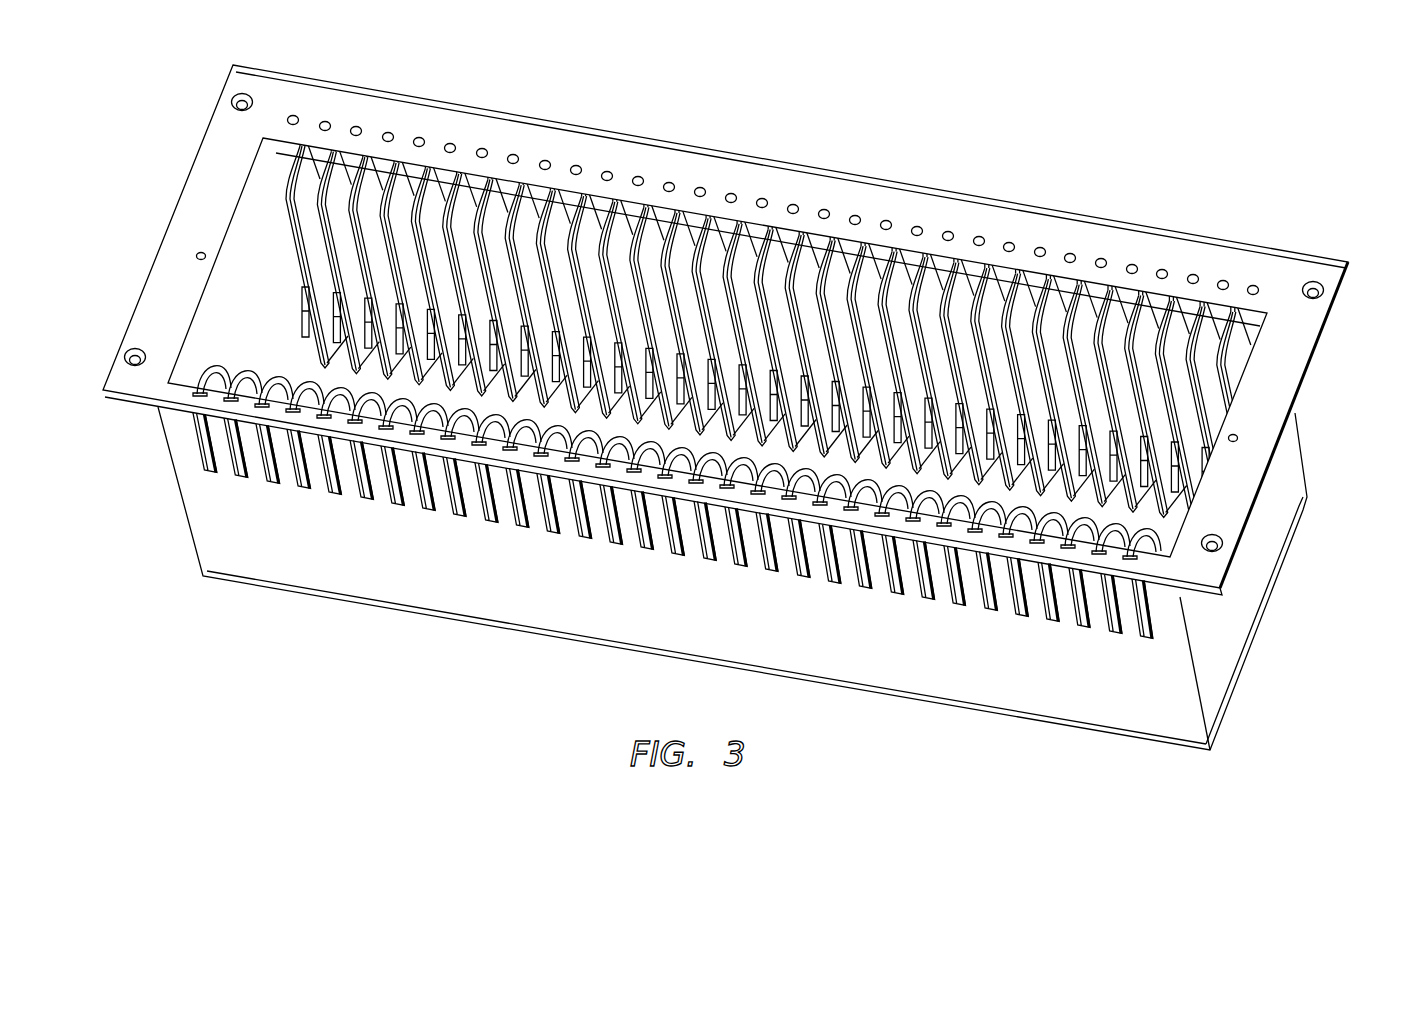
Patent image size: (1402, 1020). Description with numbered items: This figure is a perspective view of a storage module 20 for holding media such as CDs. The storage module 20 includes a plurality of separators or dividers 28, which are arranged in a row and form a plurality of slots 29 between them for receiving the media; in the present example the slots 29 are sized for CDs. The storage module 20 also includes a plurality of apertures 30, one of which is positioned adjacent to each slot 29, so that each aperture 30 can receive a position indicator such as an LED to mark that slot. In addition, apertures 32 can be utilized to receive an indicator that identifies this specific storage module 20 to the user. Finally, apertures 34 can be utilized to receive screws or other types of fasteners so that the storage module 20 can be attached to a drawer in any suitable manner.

The storage module 20 is at (678, 162).
The separators 28 is at (303, 190).
The slots 29 is at (296, 247).
The apertures 30 is at (550, 160).
The apertures 32 is at (201, 252).
The apertures 34 is at (240, 94).